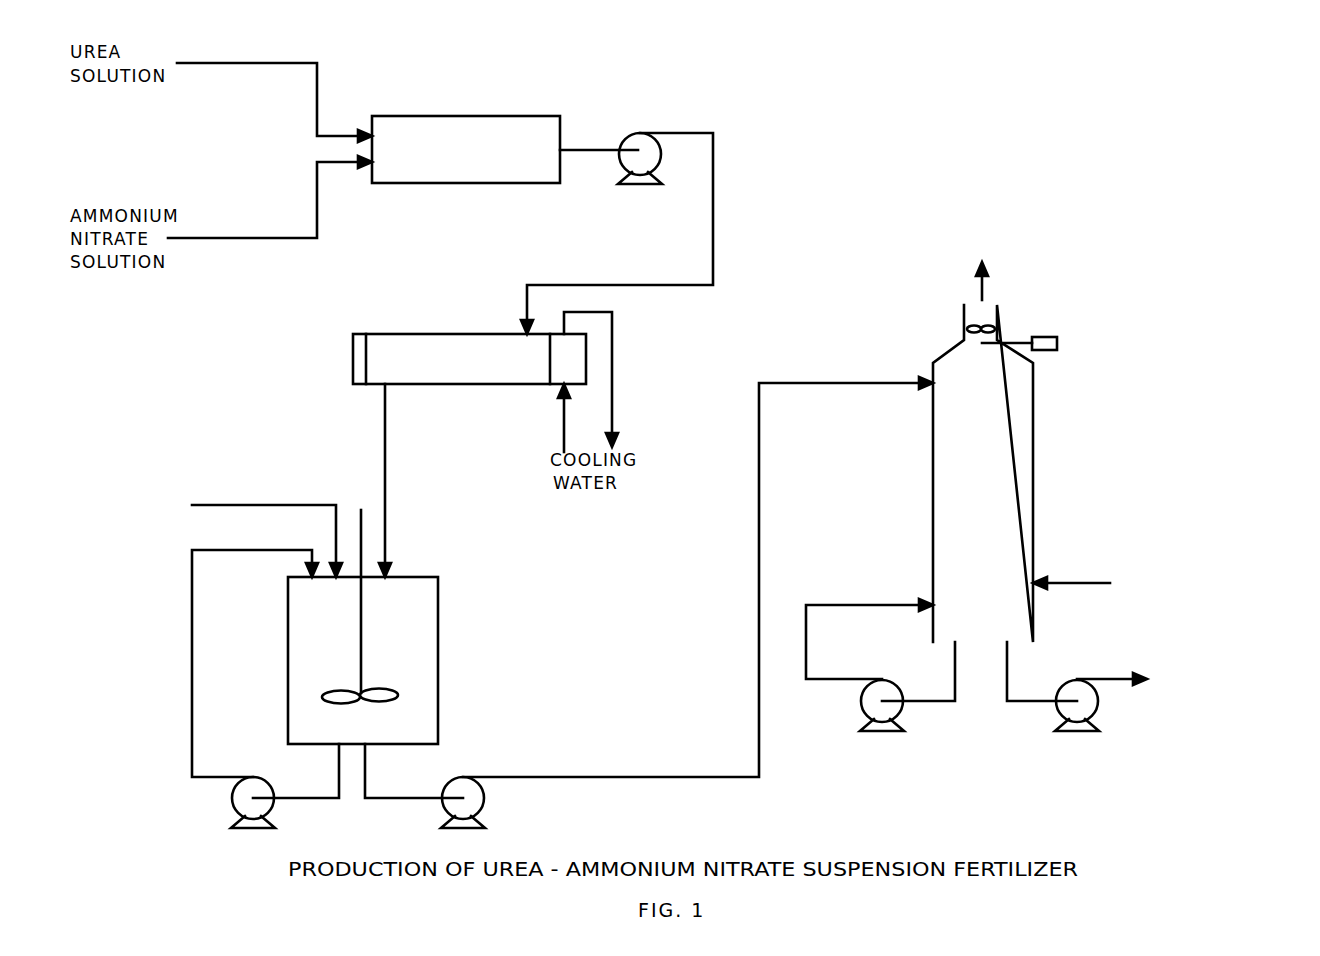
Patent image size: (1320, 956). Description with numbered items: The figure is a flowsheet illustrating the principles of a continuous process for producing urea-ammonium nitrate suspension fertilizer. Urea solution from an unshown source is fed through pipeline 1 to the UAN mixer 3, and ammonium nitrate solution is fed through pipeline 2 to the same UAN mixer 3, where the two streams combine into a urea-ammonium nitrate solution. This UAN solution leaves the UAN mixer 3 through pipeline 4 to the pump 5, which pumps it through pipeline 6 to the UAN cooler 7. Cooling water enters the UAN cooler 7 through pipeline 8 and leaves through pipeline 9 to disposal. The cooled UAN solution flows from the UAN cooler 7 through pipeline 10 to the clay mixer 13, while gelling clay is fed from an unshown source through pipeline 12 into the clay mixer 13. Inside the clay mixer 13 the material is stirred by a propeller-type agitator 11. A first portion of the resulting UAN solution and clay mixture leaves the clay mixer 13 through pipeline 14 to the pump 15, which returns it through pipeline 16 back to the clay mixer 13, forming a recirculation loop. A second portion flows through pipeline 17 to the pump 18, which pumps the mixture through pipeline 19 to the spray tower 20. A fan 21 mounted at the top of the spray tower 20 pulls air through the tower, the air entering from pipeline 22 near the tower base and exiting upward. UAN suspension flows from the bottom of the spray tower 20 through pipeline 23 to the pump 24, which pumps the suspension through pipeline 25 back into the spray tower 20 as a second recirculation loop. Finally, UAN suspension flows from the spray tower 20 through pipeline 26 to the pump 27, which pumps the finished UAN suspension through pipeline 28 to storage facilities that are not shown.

The pipeline 1 is at (255, 63).
The pipeline 2 is at (244, 239).
The UAN mixer 3 is at (470, 116).
The pipeline 4 is at (596, 150).
The pump 5 is at (638, 181).
The pipeline 6 is at (715, 205).
The UAN cooler 7 is at (436, 334).
The pipeline 8 is at (563, 406).
The pipeline 9 is at (612, 355).
The pipeline 10 is at (386, 490).
The propeller-type agitator 11 is at (361, 527).
The pipeline 12 is at (252, 505).
The clay mixer 13 is at (438, 598).
The pipeline 14 is at (306, 798).
The pump 15 is at (230, 796).
The pipeline 16 is at (192, 668).
The pipeline 17 is at (392, 795).
The pump 18 is at (484, 810).
The pipeline 19 is at (605, 777).
The spray tower 20 is at (928, 455).
The fan 21 is at (1068, 347).
The pipeline 22 is at (1074, 583).
The pipeline 23 is at (953, 671).
The pump 24 is at (856, 703).
The pipeline 25 is at (843, 605).
The pipeline 26 is at (1005, 641).
The pump 27 is at (1096, 709).
The pipeline 28 is at (1112, 679).